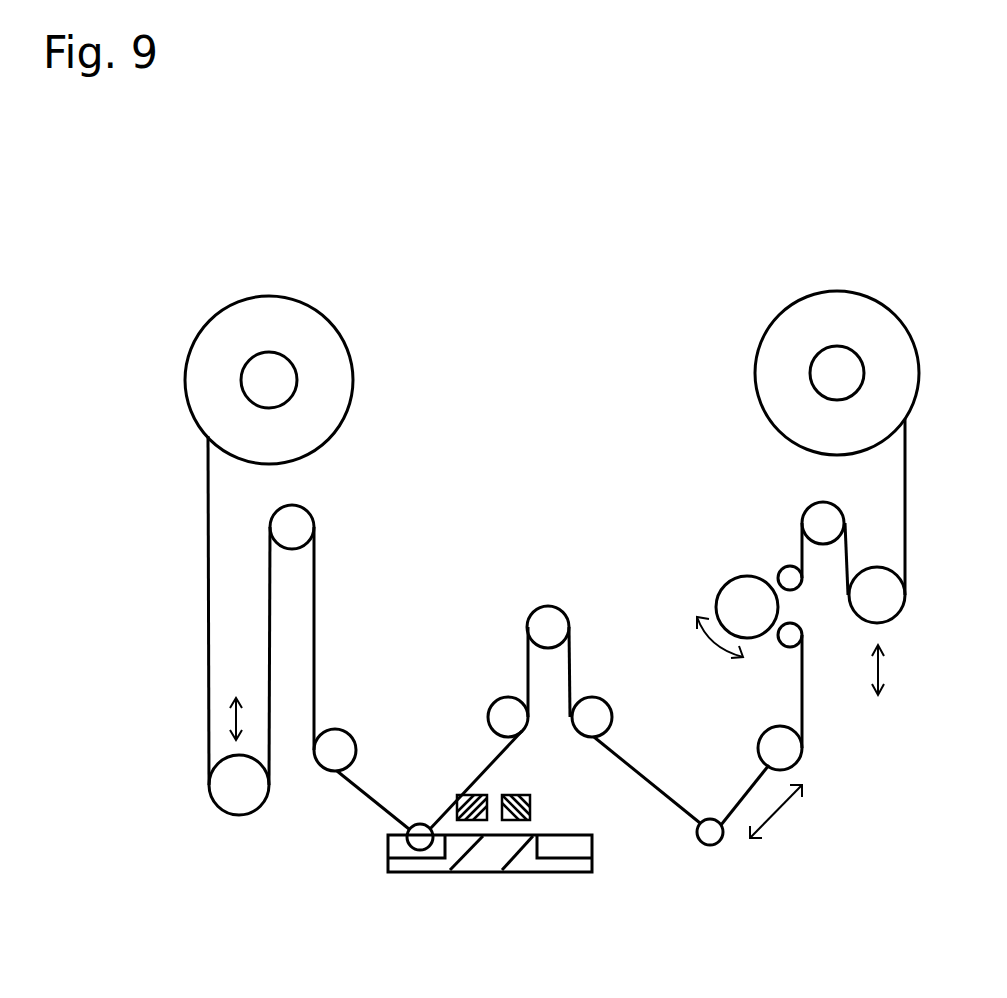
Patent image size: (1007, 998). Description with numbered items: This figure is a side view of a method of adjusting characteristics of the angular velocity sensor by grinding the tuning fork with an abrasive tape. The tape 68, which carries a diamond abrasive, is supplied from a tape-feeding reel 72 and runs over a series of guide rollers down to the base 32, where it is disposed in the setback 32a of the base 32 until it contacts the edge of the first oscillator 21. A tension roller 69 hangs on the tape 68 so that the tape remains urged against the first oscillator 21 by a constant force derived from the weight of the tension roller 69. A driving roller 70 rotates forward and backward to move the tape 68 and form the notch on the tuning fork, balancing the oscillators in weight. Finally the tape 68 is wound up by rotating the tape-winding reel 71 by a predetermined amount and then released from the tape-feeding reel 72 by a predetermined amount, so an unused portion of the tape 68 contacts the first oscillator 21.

The tape-feeding reel 72 is at (285, 338).
The tape-winding reel 71 is at (845, 323).
The driving roller 70 is at (733, 592).
The tension roller 69 is at (235, 808).
The tape 68 is at (357, 797).
The setback 32a is at (407, 850).
The base 32 is at (527, 860).
The first oscillator 21 is at (472, 820).